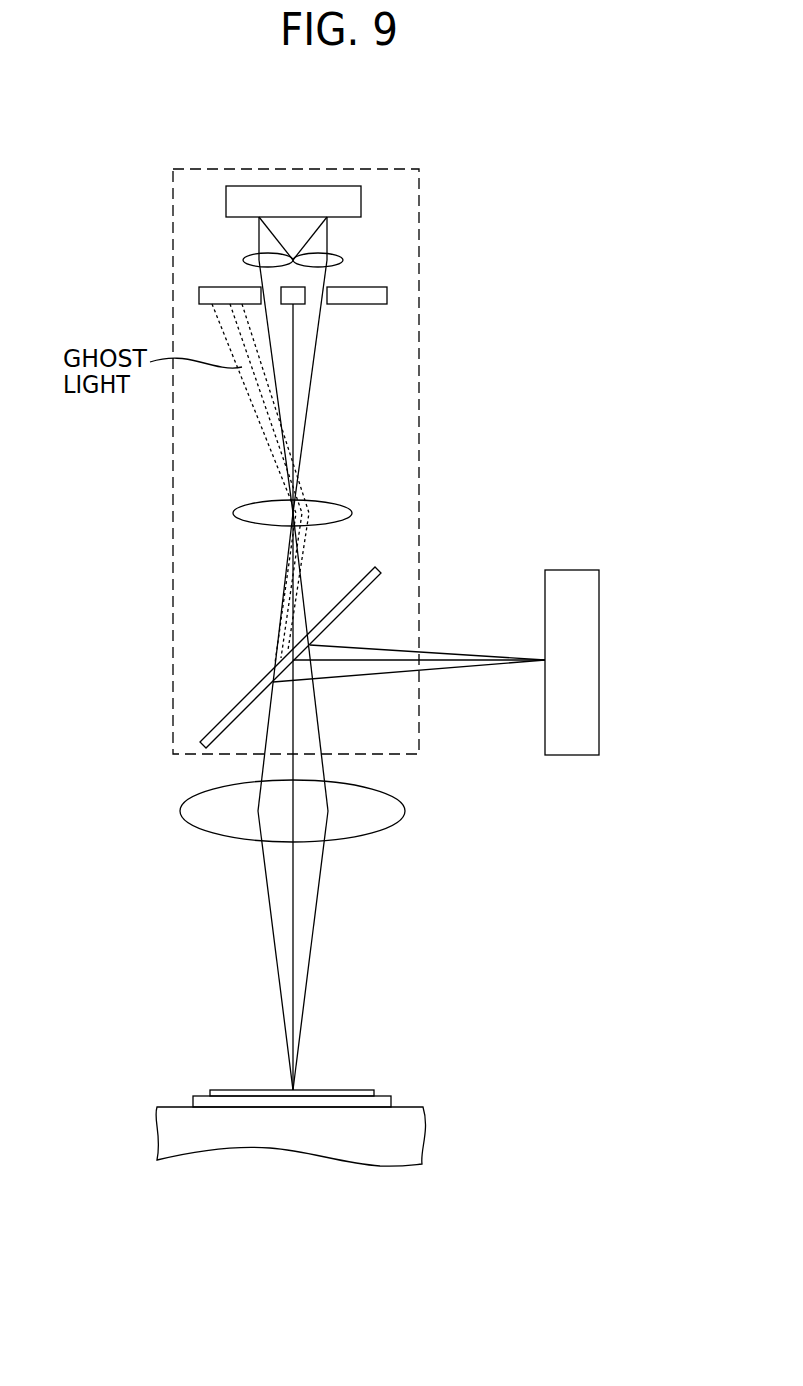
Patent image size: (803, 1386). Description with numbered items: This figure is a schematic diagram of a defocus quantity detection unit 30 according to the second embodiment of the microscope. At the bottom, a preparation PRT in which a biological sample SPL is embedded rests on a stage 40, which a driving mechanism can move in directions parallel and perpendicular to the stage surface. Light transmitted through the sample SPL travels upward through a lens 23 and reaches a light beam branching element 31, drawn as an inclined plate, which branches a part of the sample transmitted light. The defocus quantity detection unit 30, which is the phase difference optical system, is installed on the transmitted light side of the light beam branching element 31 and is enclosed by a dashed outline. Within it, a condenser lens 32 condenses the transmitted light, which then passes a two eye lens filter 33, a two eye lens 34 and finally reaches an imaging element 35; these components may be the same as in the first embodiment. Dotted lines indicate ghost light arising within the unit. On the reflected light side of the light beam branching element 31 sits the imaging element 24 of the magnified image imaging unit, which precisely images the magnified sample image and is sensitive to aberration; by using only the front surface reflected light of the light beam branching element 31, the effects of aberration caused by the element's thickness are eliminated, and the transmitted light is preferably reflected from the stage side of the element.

The defocus quantity detection unit 30 is at (367, 169).
The imaging element 35 is at (361, 196).
The two eye lens 34 is at (243, 260).
The two eye lens filter 33 is at (387, 293).
The condenser lens 32 is at (330, 502).
The light beam branching element 31 is at (219, 721).
The imaging element 24 is at (573, 570).
The objective lens 23 is at (180, 811).
The stage 40 is at (428, 1130).
The biological sample SPL is at (310, 1090).
The preparation PRT is at (383, 1096).